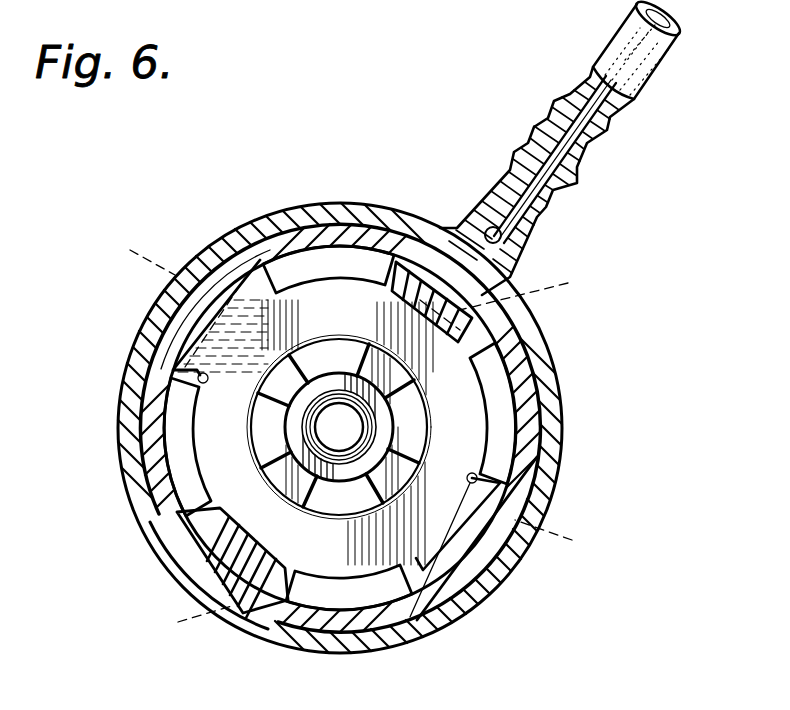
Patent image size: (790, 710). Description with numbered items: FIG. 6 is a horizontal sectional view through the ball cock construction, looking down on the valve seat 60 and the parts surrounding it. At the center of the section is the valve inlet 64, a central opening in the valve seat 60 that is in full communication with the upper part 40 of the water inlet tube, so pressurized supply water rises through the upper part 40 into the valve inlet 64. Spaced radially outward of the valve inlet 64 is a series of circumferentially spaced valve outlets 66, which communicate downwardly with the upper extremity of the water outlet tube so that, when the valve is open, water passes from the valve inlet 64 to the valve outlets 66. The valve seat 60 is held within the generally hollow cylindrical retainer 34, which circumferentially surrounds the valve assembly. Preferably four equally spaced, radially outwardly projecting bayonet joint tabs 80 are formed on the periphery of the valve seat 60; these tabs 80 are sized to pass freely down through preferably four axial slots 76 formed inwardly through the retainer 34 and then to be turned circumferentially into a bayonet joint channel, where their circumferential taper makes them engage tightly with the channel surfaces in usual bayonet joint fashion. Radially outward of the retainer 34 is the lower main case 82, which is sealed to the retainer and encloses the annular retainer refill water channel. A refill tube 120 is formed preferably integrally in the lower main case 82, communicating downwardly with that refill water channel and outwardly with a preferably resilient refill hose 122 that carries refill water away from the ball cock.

The retainer 34 is at (158, 549).
The upper part of water inlet tube 40 is at (365, 447).
The valve seat 60 is at (210, 445).
The valve inlet 64 is at (322, 427).
The valve outlets 66 is at (348, 357).
The axial slots 76 is at (322, 262).
The bayonet joint tabs 80 is at (351, 440).
The lower main case 82 is at (150, 333).
The refill tube 120 is at (496, 180).
The refill hose 122 is at (613, 45).